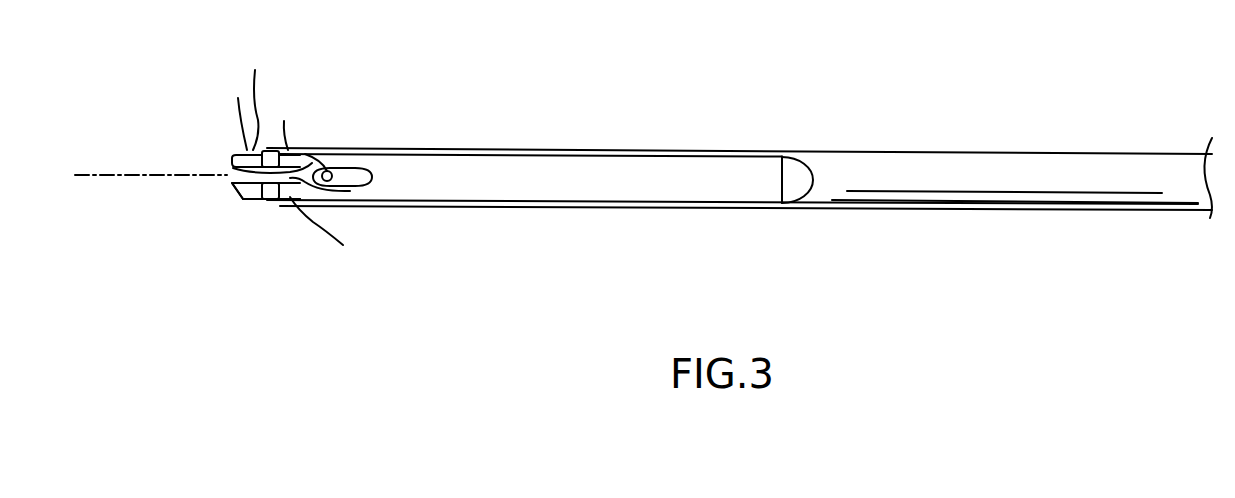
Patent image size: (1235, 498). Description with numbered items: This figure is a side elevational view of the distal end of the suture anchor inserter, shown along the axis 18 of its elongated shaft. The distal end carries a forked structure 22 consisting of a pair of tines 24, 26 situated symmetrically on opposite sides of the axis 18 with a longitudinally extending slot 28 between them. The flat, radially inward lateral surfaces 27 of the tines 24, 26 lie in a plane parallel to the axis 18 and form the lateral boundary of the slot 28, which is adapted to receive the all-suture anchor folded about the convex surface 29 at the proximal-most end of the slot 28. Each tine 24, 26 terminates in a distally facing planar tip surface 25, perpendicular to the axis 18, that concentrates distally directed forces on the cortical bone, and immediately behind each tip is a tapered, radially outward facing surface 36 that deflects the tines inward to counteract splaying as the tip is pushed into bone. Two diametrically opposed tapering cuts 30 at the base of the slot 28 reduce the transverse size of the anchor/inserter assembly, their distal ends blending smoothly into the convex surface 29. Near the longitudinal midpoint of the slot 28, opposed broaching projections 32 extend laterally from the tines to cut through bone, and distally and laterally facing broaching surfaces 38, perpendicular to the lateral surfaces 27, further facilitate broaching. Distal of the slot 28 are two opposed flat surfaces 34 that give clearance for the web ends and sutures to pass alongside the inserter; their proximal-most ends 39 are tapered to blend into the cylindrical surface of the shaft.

The axis 18 is at (113, 205).
The forked structure 22 is at (254, 96).
The tine 24 is at (236, 110).
The distally facing planar tip surface 25 is at (232, 158).
The tine 26 is at (273, 243).
The lateral surface 27 is at (233, 172).
The slot 28 is at (306, 154).
The convex surface 29 is at (332, 165).
The tapering cut 30 is at (393, 112).
The broaching projection 32 is at (312, 183).
The flat surface 34 is at (592, 110).
The tapered surface 36 is at (238, 200).
The broaching surface 38 is at (250, 155).
The proximal-most end 39 is at (419, 169).